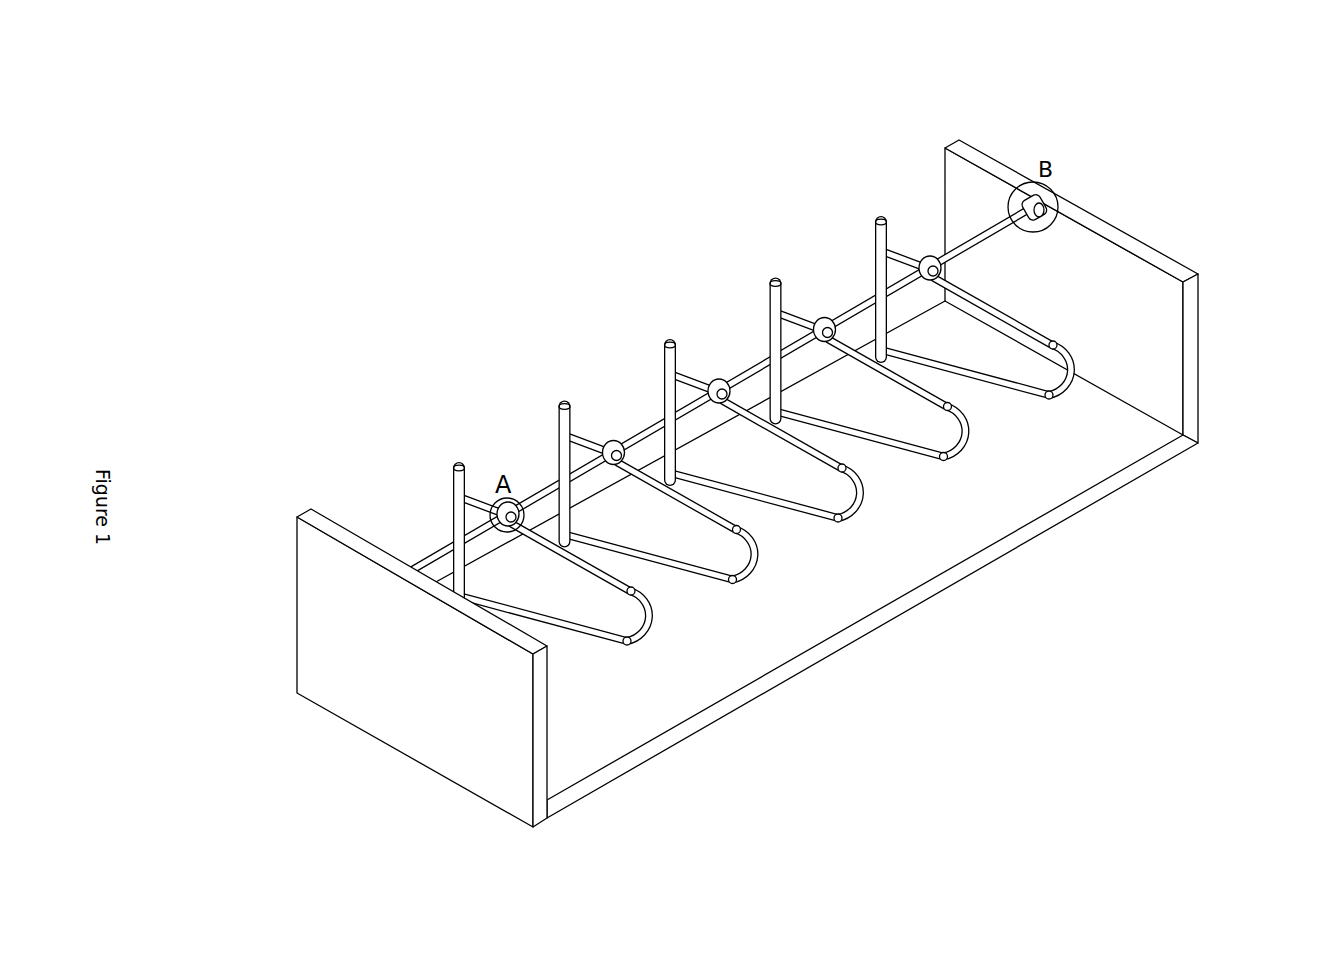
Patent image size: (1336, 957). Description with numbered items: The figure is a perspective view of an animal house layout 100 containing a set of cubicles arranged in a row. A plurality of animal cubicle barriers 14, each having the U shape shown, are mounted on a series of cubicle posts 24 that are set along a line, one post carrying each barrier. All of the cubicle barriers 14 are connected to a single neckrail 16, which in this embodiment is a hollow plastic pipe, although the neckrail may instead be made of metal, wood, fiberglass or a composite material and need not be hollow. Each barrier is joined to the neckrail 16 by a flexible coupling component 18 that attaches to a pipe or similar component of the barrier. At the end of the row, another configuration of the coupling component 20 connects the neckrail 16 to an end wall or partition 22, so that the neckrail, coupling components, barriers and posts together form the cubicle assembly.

The animal house layout 100 is at (196, 163).
The animal cubicle barrier 14 is at (870, 510).
The neckrail 16 is at (858, 300).
The flexible coupling component 18 is at (925, 252).
The coupling component 20 is at (1057, 208).
The end wall or partition 22 is at (1185, 270).
The cubicle post 24 is at (436, 504).